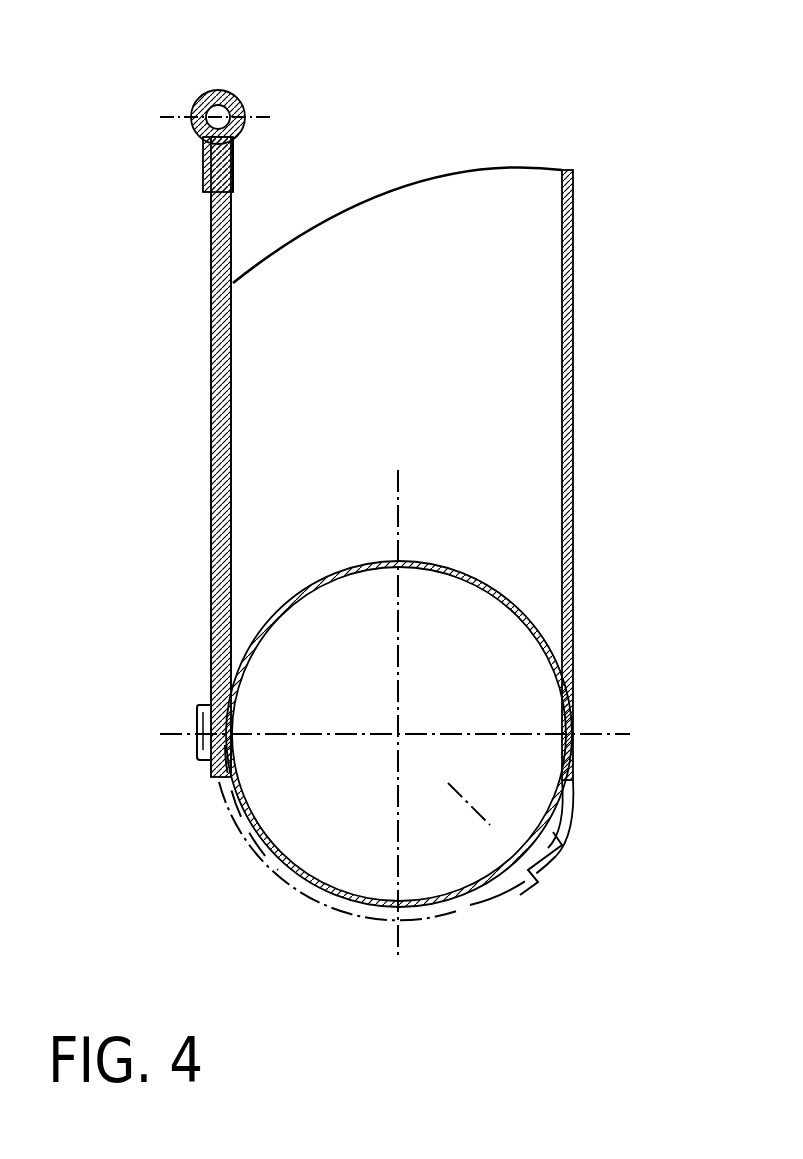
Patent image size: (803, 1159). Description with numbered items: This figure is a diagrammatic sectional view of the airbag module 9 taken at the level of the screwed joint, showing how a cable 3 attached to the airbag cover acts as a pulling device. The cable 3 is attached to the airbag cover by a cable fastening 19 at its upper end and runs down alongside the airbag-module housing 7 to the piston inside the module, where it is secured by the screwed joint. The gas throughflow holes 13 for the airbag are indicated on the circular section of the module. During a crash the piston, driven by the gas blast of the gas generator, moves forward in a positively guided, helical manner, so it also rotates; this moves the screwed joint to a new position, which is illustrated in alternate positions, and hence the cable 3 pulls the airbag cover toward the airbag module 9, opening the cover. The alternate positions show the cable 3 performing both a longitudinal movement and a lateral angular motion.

The cable 3 is at (215, 515).
The airbag-module housing 7 is at (570, 296).
The airbag module 9 is at (505, 713).
The gas throughflow holes 13 is at (455, 572).
The cable fastening 19 is at (196, 103).